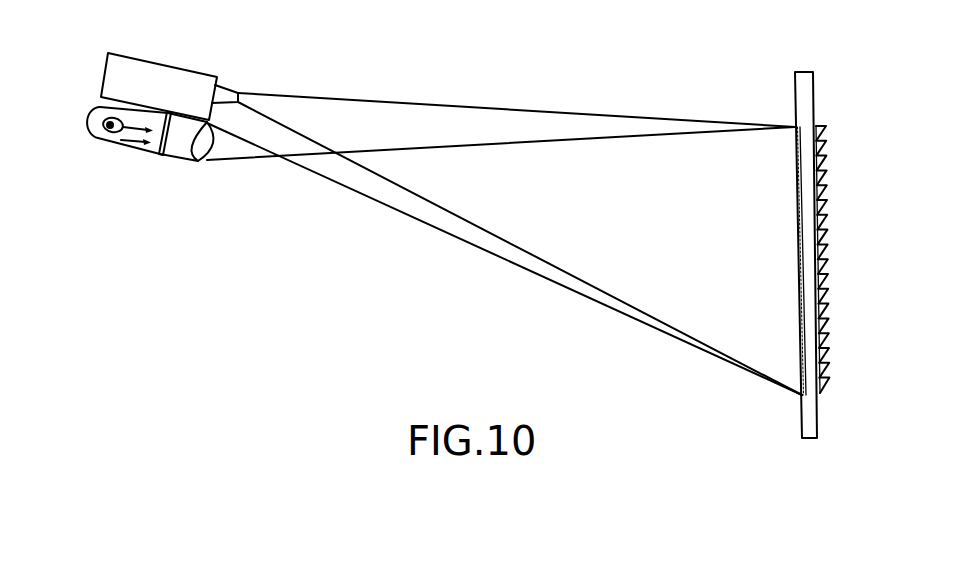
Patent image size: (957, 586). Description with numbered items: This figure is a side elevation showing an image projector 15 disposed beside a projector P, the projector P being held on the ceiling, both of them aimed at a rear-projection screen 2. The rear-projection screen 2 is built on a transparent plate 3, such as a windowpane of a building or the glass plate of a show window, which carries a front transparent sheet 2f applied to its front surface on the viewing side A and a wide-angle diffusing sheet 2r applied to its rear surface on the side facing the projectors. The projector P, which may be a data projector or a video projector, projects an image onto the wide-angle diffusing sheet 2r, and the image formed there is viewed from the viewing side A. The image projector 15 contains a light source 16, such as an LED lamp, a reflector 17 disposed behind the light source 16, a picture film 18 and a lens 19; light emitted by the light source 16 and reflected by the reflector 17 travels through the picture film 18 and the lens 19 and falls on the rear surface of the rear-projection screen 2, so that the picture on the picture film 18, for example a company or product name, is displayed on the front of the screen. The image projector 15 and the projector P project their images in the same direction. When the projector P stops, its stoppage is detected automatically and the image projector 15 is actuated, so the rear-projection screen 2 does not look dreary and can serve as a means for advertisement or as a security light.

The image projector P is at (162, 75).
The image projector 15 is at (148, 129).
The light source 16 is at (95, 135).
The reflector 17 is at (118, 133).
The picture film 18 is at (167, 153).
The lens 19 is at (203, 150).
The rear-projection screen 2 is at (801, 250).
The transparent plate 3 is at (809, 95).
The front transparent sheet 2f is at (829, 173).
The wide-angle diffusing sheet 2r is at (796, 193).
The viewing side A is at (900, 280).